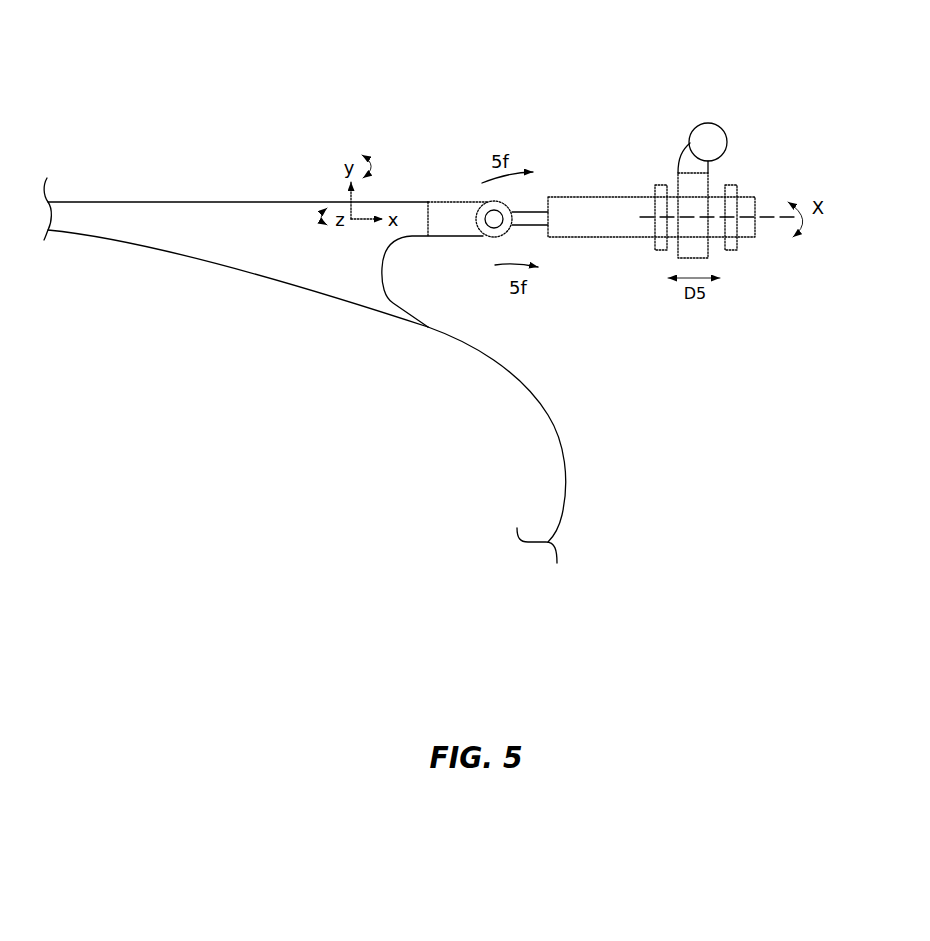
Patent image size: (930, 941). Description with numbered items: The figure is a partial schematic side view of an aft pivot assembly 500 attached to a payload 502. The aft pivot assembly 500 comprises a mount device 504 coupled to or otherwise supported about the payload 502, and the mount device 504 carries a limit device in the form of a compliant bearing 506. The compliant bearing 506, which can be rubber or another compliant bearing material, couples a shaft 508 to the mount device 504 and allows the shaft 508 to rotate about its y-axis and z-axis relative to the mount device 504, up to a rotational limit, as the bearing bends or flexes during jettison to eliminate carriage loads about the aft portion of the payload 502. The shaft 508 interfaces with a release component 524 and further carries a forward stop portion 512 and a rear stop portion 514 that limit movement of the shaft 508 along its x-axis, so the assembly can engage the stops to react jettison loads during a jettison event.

The aft pivot assembly 500 is at (270, 46).
The payload 502 is at (567, 477).
The mount device 504 is at (223, 218).
The compliant bearing 506 is at (487, 237).
The shaft 508 is at (615, 197).
The forward stop portion 512 is at (658, 250).
The rear stop portion 514 is at (727, 252).
The release component 524 is at (735, 161).